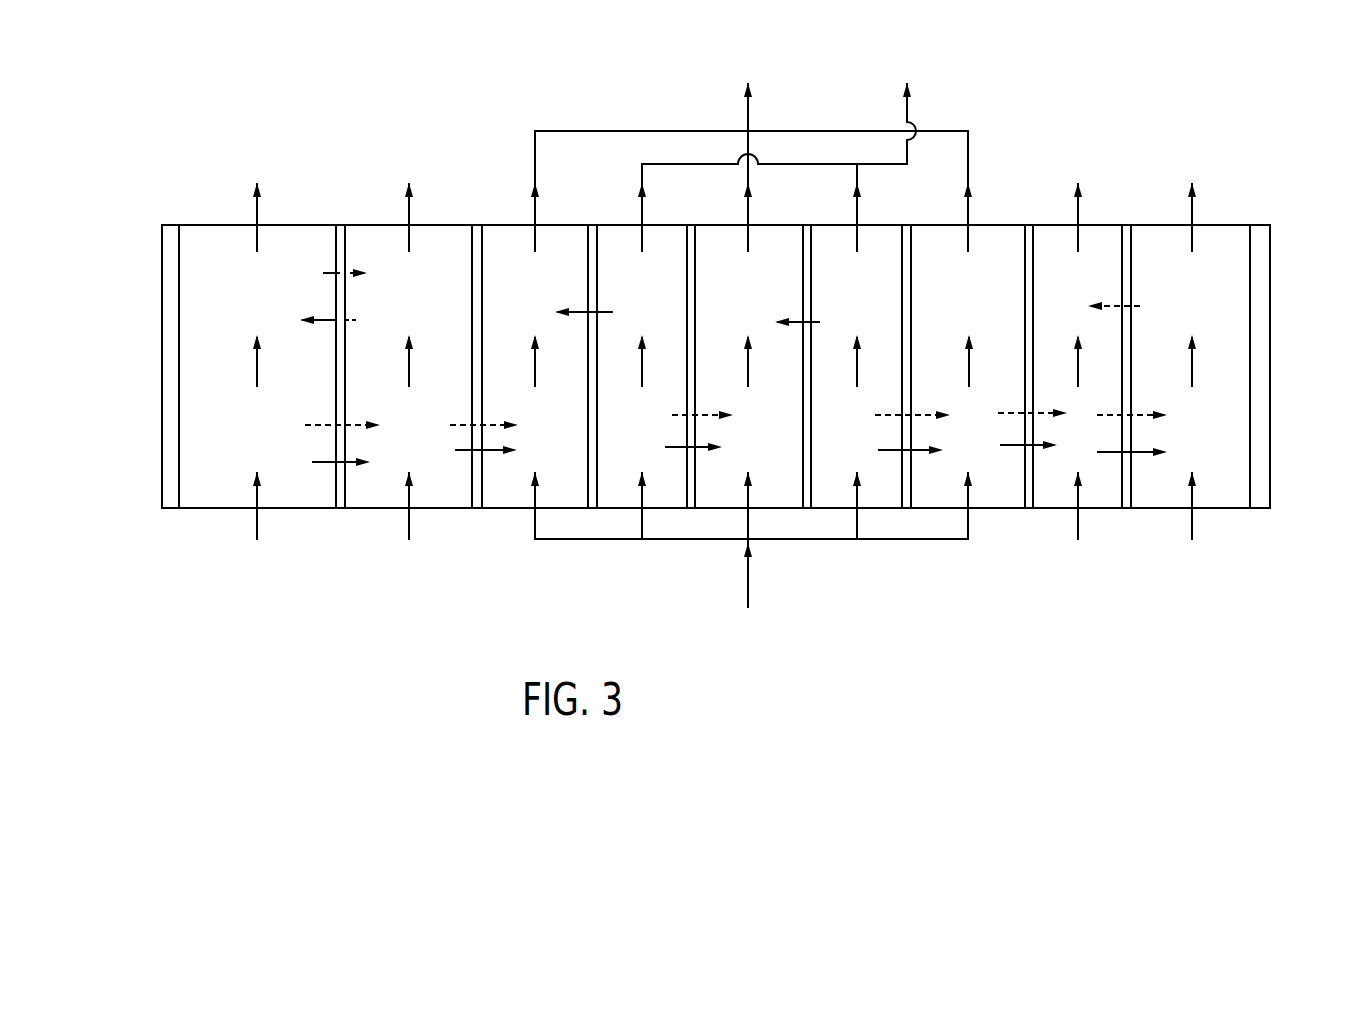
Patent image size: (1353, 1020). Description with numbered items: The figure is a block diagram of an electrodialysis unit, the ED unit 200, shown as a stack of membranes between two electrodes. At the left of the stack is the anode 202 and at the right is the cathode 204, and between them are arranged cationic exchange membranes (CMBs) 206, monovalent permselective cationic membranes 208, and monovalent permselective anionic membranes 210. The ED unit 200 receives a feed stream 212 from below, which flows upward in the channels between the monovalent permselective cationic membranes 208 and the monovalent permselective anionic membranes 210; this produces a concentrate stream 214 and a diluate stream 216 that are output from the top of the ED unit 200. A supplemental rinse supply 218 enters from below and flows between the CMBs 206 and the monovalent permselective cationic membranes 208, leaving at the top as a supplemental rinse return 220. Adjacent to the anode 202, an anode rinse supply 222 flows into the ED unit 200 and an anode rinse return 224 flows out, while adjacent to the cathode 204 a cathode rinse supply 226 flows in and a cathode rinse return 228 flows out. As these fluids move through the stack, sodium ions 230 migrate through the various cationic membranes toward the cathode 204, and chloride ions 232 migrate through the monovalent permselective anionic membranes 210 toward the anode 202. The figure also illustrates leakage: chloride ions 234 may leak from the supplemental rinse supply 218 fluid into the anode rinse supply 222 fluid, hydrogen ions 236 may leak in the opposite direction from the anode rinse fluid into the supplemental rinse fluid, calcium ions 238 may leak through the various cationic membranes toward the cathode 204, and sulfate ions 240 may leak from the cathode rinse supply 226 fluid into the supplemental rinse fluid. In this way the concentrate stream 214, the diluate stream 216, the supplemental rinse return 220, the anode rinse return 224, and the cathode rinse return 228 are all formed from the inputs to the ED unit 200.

The ED unit 200 is at (197, 64).
The anode 202 is at (162, 365).
The cathode 204 is at (1270, 292).
The cationic exchange membrane 206 is at (344, 372).
The monovalent permselective cationic membrane 208 is at (475, 296).
The monovalent permselective anionic membrane 210 is at (590, 266).
The feed stream 212 is at (748, 578).
The concentrate stream 214 is at (748, 120).
The diluate stream 216 is at (907, 110).
The supplemental rinse supply 218 is at (409, 521).
The supplemental rinse return 220 is at (410, 207).
The anode rinse supply 222 is at (257, 521).
The anode rinse return 224 is at (257, 208).
The cathode rinse supply 226 is at (1192, 523).
The cathode rinse return 228 is at (1192, 210).
The sodium ions 230 is at (325, 463).
The chloride ions 232 is at (578, 318).
The chloride ions 234 is at (330, 318).
The hydrogen ions 236 is at (330, 272).
The calcium ions 238 is at (356, 424).
The sulfate ions 240 is at (1145, 312).